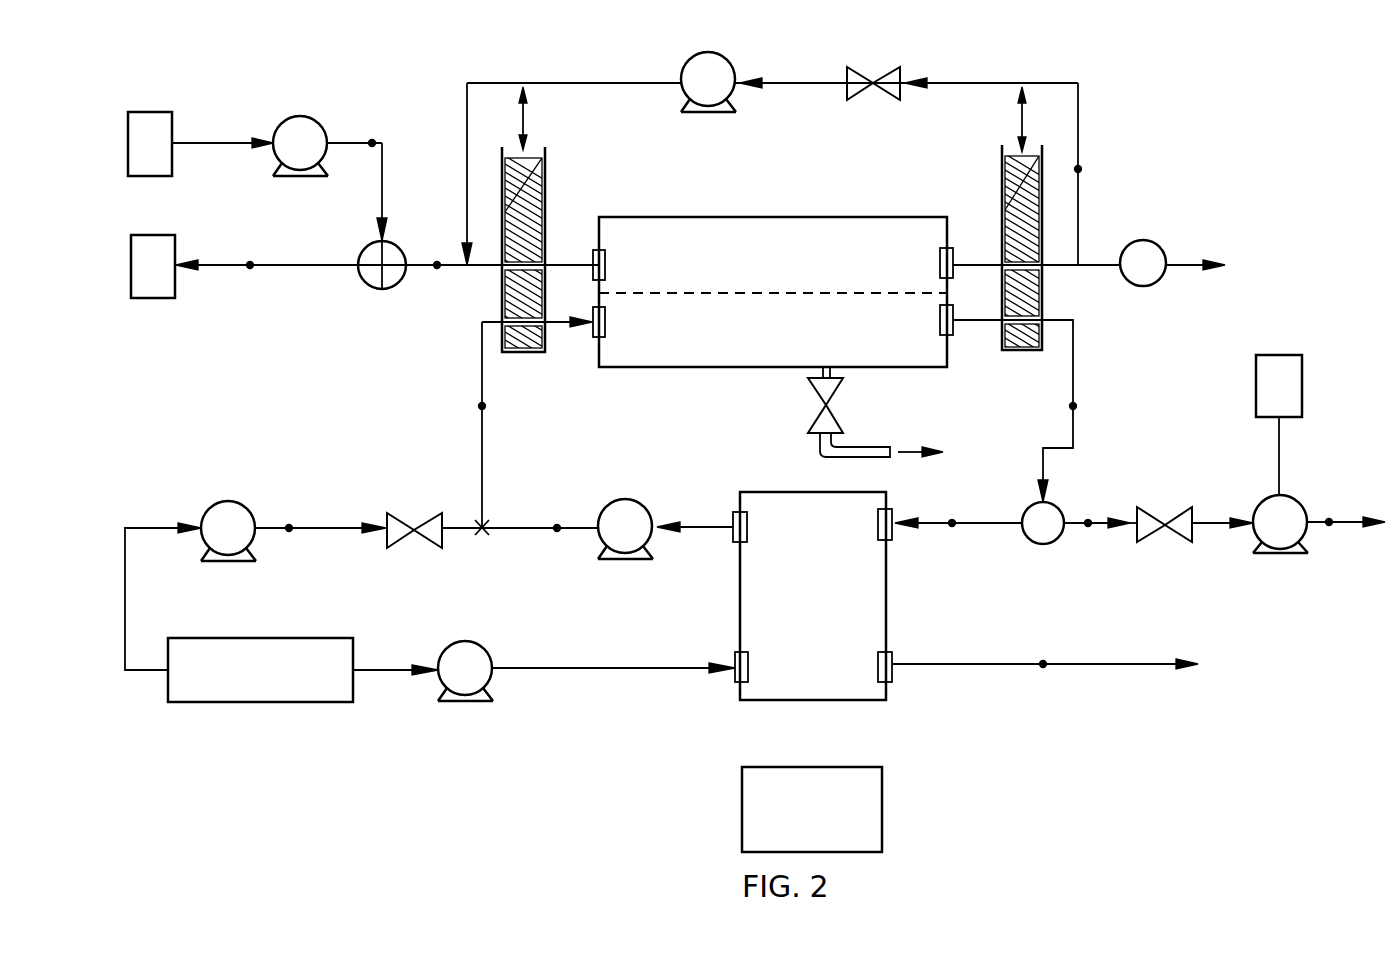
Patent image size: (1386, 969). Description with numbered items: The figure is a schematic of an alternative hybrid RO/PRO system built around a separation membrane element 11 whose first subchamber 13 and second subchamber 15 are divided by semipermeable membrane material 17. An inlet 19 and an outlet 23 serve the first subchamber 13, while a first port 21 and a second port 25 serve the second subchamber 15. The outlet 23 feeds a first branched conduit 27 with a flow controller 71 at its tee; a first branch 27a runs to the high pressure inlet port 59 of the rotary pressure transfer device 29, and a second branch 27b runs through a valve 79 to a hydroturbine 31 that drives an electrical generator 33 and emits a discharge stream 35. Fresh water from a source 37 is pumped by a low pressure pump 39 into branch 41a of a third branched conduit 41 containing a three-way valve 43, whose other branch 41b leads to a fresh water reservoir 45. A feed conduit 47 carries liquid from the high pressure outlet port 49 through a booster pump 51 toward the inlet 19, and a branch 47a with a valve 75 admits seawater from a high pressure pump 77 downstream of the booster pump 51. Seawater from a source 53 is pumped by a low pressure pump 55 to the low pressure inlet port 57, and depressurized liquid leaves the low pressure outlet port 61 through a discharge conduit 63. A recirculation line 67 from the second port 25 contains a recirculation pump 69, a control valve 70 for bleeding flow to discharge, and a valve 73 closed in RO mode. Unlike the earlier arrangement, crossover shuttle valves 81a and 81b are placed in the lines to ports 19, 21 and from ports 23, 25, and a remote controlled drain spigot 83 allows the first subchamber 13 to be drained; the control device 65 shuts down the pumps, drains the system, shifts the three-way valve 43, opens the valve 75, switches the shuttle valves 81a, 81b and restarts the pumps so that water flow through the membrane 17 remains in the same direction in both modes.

The separation membrane element 11 is at (849, 216).
The first subchamber 13 is at (762, 361).
The second subchamber 15 is at (762, 282).
The semipermeable membrane material 17 is at (670, 292).
The inlet 19 is at (593, 336).
The first port 21 is at (593, 261).
The outlet 23 is at (955, 316).
The second port 25 is at (955, 258).
The first branched conduit 27 is at (1077, 406).
The first branch 27a is at (952, 526).
The second branch 27b is at (1088, 526).
The pressure transfer device 29 is at (802, 666).
The hydroturbine 31 is at (1269, 535).
The electrical generator 33 is at (1268, 398).
The discharge stream 35 is at (1329, 520).
The source of fresh water 37 is at (139, 156).
The low pressure pump 39 is at (289, 156).
The third branched conduit 41 is at (437, 268).
The first branch of third branched conduit 41a is at (373, 141).
The second branch of third branched conduit 41b is at (250, 268).
The three-way valve 43 is at (383, 289).
The fresh water reservoir 45 is at (142, 278).
The feed conduit 47 is at (480, 406).
The branch of feed conduit 47a is at (289, 526).
The high pressure outlet port 49 is at (733, 521).
The booster pump 51 is at (614, 539).
The source of high salt concentration liquid 53 is at (320, 687).
The low pressure pump 55 is at (454, 681).
The low pressure inlet port 57 is at (735, 677).
The high pressure inlet port 59 is at (894, 518).
The low pressure outlet port 61 is at (893, 678).
The discharge conduit 63 is at (1043, 662).
The control device 65 is at (798, 817).
The recirculation line 67 is at (1081, 169).
The recirculation pump 69 is at (697, 92).
The control valve 70 is at (1143, 240).
The flow controller 71 is at (1032, 536).
The valve 73 is at (900, 100).
The valve 75 is at (389, 548).
The high pressure pump 77 is at (217, 541).
The valve 79 is at (1193, 507).
The crossover shuttle valve 81a is at (522, 353).
The crossover shuttle valve 81b is at (1025, 351).
The drain spigot 83 is at (808, 421).